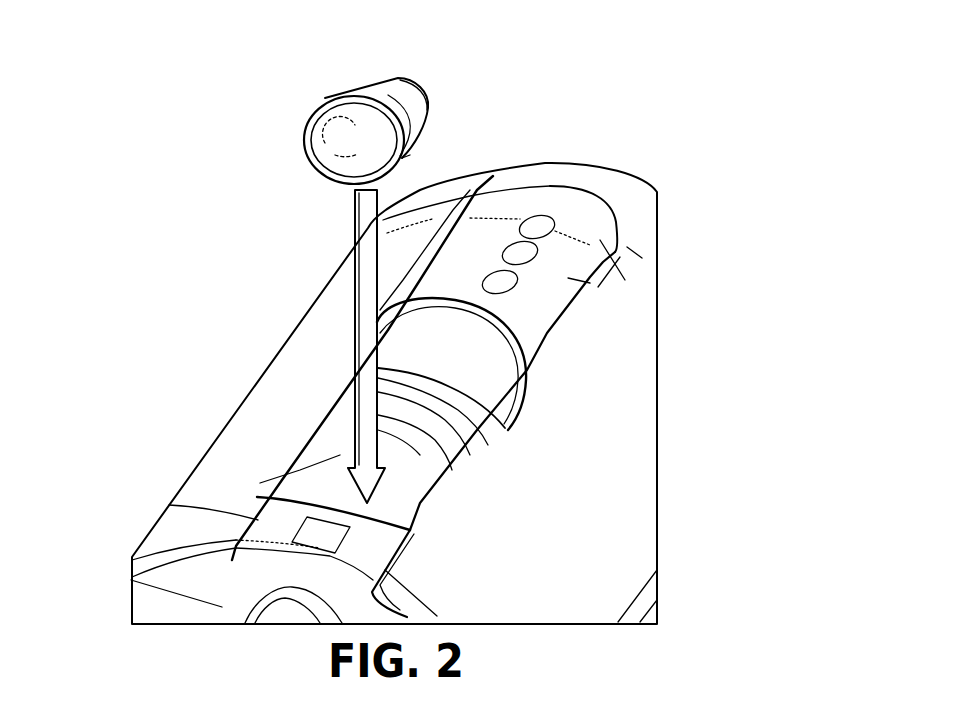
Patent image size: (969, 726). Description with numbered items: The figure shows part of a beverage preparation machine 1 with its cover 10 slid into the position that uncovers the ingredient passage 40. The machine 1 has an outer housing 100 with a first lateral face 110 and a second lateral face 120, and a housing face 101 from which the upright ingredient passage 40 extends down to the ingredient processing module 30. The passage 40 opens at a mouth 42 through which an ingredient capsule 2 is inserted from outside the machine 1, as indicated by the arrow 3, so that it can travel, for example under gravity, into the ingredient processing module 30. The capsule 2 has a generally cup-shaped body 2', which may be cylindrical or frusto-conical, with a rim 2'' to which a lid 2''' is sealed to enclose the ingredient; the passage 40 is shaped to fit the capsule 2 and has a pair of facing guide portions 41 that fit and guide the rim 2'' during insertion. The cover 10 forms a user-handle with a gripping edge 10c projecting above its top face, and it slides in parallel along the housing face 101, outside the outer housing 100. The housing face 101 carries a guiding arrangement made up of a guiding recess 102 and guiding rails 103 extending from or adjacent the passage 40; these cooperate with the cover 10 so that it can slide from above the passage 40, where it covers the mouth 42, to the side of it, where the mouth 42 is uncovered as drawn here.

The machine 1 is at (273, 290).
The ingredient capsule 2 is at (341, 112).
The cup-shaped body 2' is at (419, 67).
The rim 2'' is at (436, 151).
The lid 2''' is at (300, 141).
The arrow 3 is at (354, 230).
The cover 10 is at (451, 384).
The gripping edge 10c is at (468, 400).
The ingredient processing module 30 is at (293, 613).
The ingredient passage 40 is at (425, 470).
The guide portions 41 is at (260, 483).
The mouth 42 is at (169, 505).
The outer housing 100 is at (273, 352).
The housing face 101 is at (590, 398).
The guiding recess 102 is at (590, 283).
The guiding rail 103 is at (560, 180).
The first lateral face 110 is at (131, 580).
The second lateral face 120 is at (541, 165).